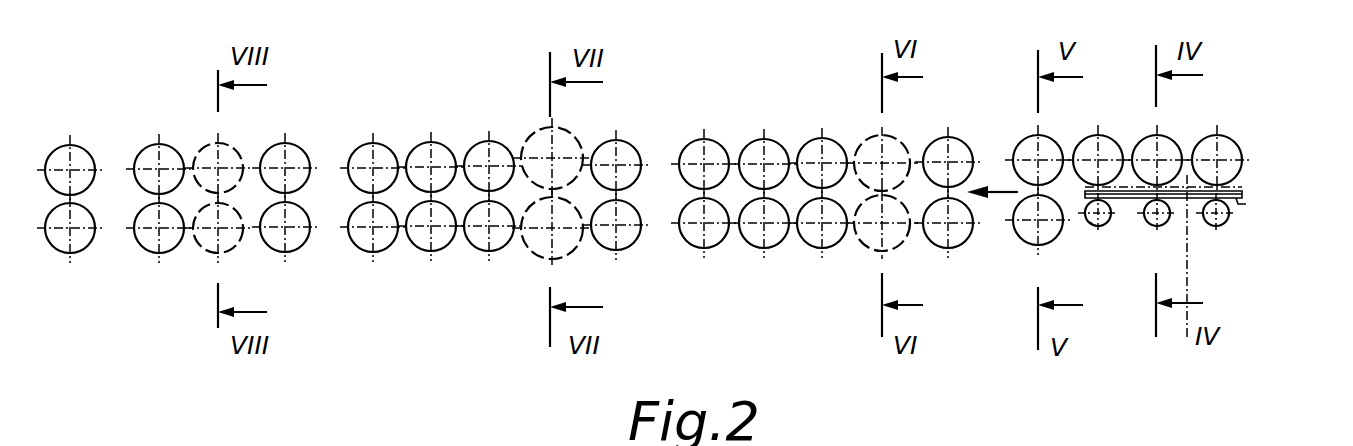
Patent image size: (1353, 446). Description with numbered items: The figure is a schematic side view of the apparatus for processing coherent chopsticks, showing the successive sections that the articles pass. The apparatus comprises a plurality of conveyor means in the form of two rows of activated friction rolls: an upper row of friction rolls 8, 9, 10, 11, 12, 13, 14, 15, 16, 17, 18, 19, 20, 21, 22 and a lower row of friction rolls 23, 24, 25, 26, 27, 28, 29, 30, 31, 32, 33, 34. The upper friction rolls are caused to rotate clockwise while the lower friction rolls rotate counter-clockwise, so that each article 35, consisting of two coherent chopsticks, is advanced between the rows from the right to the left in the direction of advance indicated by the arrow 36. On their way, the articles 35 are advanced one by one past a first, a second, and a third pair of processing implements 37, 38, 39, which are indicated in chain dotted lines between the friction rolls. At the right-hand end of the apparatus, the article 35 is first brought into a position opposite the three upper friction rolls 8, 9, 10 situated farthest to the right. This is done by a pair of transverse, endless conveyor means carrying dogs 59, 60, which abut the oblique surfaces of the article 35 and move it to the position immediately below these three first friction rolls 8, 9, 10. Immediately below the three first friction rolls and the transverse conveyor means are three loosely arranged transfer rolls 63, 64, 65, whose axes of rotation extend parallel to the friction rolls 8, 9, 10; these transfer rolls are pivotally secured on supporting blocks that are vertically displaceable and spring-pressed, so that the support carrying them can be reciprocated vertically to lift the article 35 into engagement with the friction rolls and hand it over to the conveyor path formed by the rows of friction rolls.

The upper friction roll 8 is at (1230, 146).
The upper friction roll 9 is at (1170, 146).
The upper friction roll 10 is at (1109, 146).
The upper friction roll 11 is at (1050, 146).
The upper friction roll 12 is at (960, 148).
The upper friction roll 13 is at (839, 151).
The upper friction roll 14 is at (781, 152).
The upper friction roll 15 is at (721, 152).
The upper friction roll 16 is at (633, 153).
The upper friction roll 17 is at (506, 154).
The upper friction roll 18 is at (448, 155).
The upper friction roll 19 is at (390, 156).
The upper friction roll 20 is at (302, 156).
The upper friction roll 21 is at (176, 157).
The upper friction roll 22 is at (87, 158).
The lower friction roll 23 is at (1055, 233).
The lower friction roll 24 is at (962, 235).
The lower friction roll 25 is at (838, 236).
The lower friction roll 26 is at (780, 236).
The lower friction roll 27 is at (720, 236).
The lower friction roll 28 is at (632, 238).
The lower friction roll 29 is at (505, 239).
The lower friction roll 30 is at (447, 239).
The lower friction roll 31 is at (389, 240).
The lower friction roll 32 is at (301, 240).
The lower friction roll 33 is at (175, 241).
The lower friction roll 34 is at (86, 241).
The article 35 is at (1237, 203).
The arrow 36 is at (997, 192).
The first pair of processing implements 37 is at (890, 131).
The second pair of processing implements 38 is at (559, 124).
The third pair of processing implements 39 is at (228, 140).
The dog 59 is at (1243, 195).
The dog 60 is at (1129, 203).
The transfer roll 63 is at (1226, 217).
The transfer roll 64 is at (1173, 221).
The transfer roll 65 is at (1111, 228).